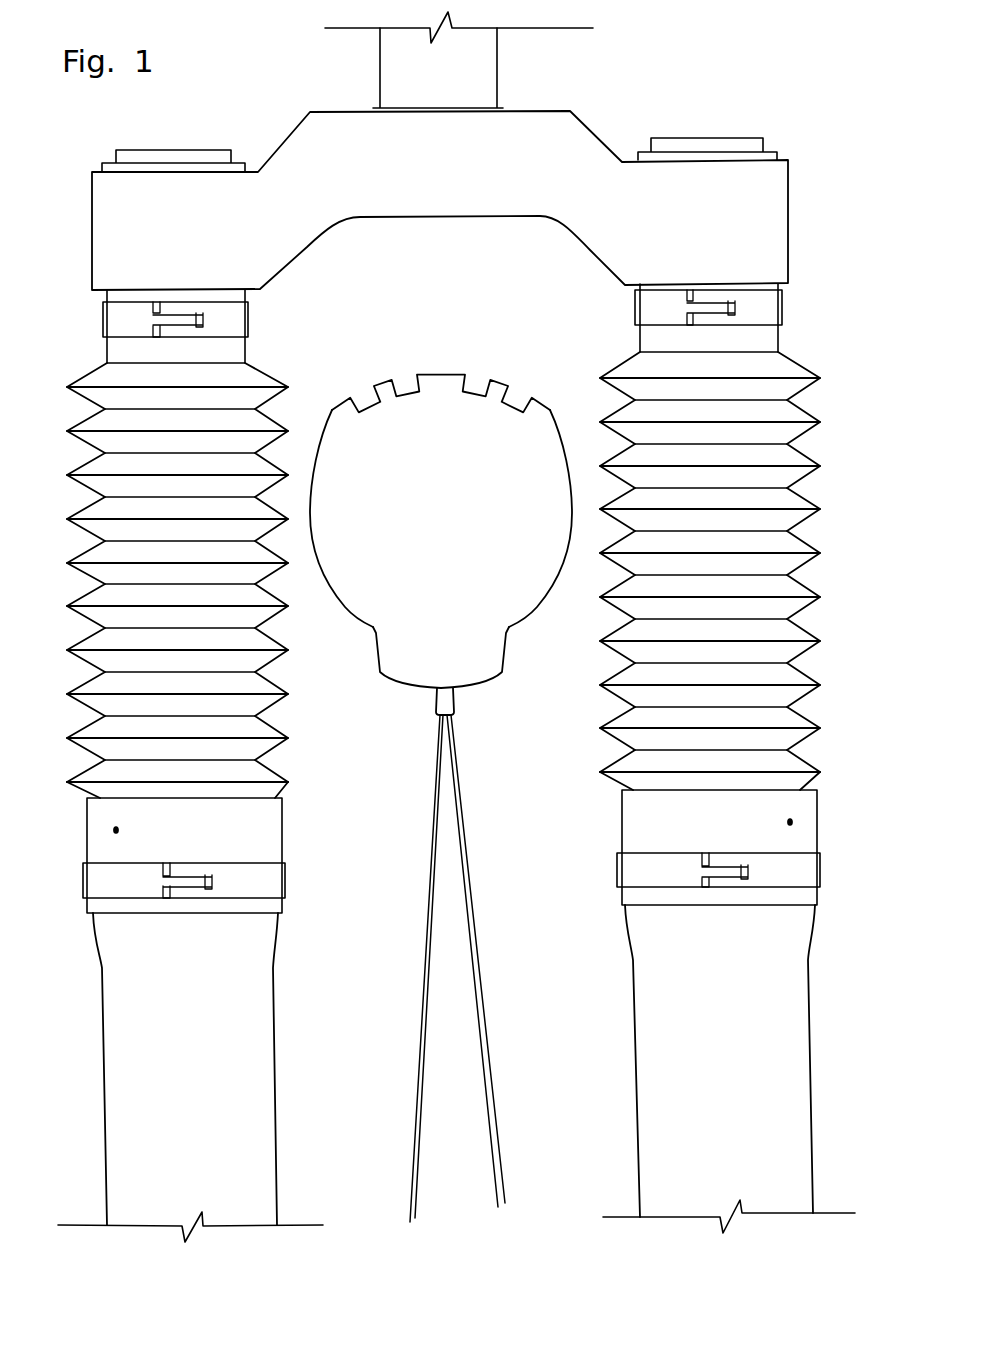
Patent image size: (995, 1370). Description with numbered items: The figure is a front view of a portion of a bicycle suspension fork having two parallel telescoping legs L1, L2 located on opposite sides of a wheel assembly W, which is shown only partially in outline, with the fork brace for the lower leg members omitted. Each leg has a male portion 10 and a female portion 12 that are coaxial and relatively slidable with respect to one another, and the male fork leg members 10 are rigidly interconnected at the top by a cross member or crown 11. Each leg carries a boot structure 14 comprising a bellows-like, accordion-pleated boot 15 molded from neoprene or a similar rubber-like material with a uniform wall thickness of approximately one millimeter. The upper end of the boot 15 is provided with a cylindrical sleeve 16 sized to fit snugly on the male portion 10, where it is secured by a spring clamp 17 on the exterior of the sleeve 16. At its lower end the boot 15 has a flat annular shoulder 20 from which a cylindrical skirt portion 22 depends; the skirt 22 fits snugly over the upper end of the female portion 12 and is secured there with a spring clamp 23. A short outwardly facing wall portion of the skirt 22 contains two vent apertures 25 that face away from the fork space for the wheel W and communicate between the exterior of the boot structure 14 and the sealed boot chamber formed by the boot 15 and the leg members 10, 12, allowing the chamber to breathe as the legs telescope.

The male portion 10 is at (195, 157).
The cross member or crown 11 is at (572, 145).
The female portion 12 is at (130, 1083).
The boot structure 14 is at (457, 599).
The bellows-like or accordion-pleated boot 15 is at (256, 689).
The cylindrical sleeve 16 is at (232, 347).
The spring clamp 17 is at (117, 316).
The flat annular shoulder 20 is at (276, 793).
The cylindrical skirt portion 22 is at (270, 842).
The spring clamp 23 is at (273, 884).
The vent apertures 25 is at (112, 830).
The wheel assembly W is at (498, 628).
The telescoping leg L1 is at (288, 1030).
The telescoping leg L2 is at (824, 948).